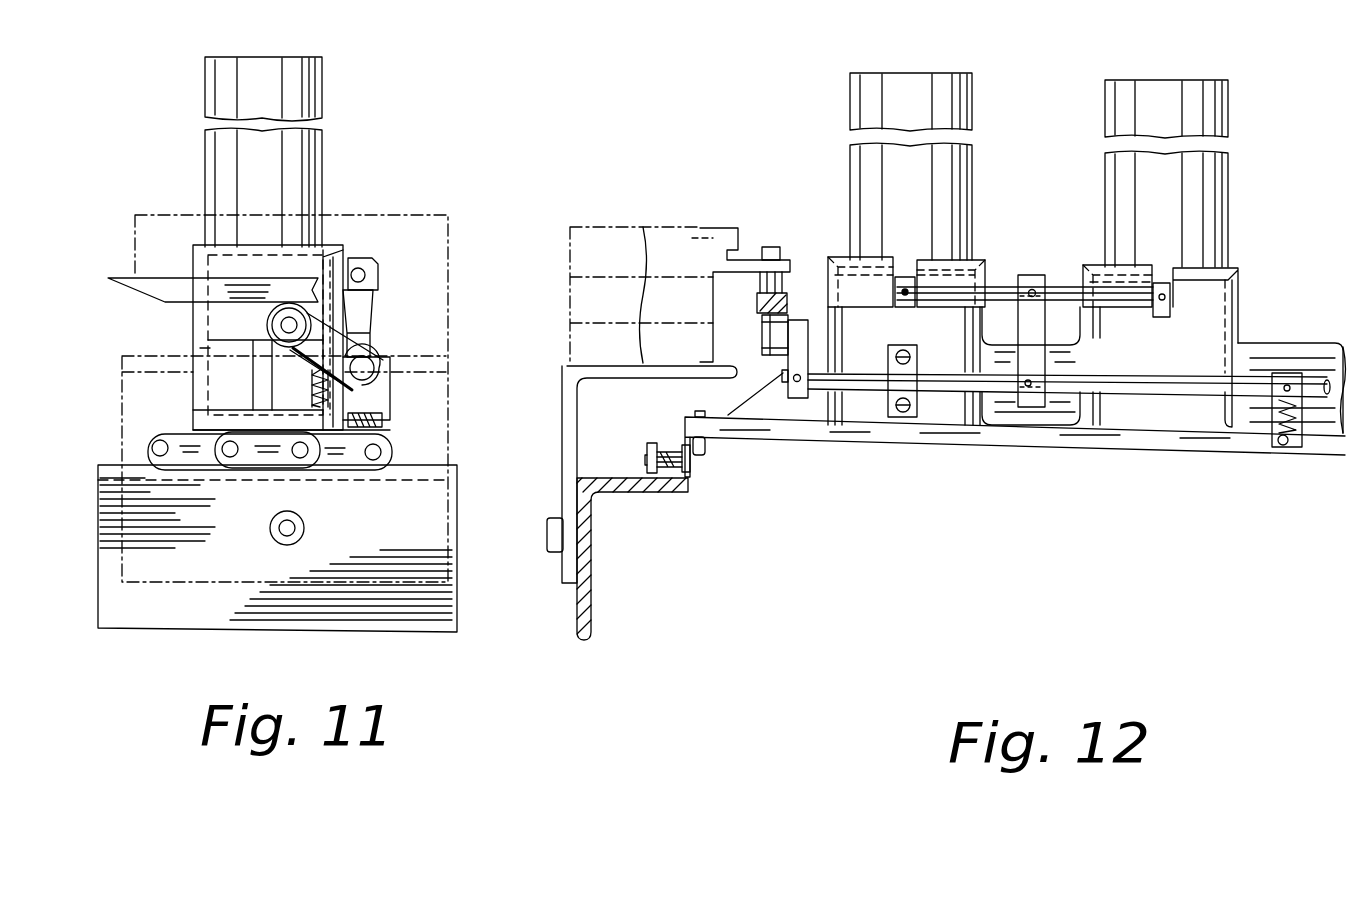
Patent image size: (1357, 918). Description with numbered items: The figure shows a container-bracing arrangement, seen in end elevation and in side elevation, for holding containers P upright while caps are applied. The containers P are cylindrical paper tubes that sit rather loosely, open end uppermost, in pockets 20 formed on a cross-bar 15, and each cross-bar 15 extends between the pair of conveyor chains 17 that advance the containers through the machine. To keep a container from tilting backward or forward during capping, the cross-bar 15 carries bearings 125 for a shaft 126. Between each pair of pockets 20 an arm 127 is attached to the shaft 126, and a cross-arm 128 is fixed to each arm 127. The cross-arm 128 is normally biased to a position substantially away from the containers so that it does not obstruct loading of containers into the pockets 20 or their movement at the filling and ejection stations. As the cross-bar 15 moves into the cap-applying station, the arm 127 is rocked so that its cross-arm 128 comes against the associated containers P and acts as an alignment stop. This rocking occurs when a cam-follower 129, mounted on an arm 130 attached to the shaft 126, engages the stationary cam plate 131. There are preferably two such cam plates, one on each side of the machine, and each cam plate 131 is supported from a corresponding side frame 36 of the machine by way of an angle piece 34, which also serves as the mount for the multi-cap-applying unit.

In FIG. 11, the containers P is at (322, 135).
In FIG. 12, the containers P is at (1105, 165).
In FIG. 11, the cross-bar 15 is at (193, 422).
In FIG. 12, the cross-bar 15 is at (953, 437).
In FIG. 11, the conveyor chains 17 is at (387, 452).
In FIG. 12, the conveyor chains 17 is at (650, 447).
In FIG. 11, the pockets 20 is at (335, 253).
In FIG. 12, the pockets 20 is at (1238, 290).
In FIG. 11, the angle piece 34 is at (447, 460).
In FIG. 12, the angle piece 34 is at (570, 455).
In FIG. 11, the side frame 36 is at (447, 632).
In FIG. 12, the side frame 36 is at (585, 605).
In FIG. 11, the bearings 125 is at (383, 355).
In FIG. 12, the bearings 125 is at (1069, 396).
In FIG. 11, the shaft 126 is at (375, 373).
In FIG. 11, the arm 127 is at (367, 312).
In FIG. 12, the arm 127 is at (1033, 277).
In FIG. 11, the cross-arm 128 is at (205, 348).
In FIG. 12, the cross-arm 128 is at (1000, 290).
In FIG. 11, the cam-follower 129 is at (272, 313).
In FIG. 12, the cam-follower 129 is at (766, 333).
In FIG. 11, the arm 130 is at (303, 363).
In FIG. 11, the cam plate 131 is at (170, 280).
In FIG. 12, the cam plate 131 is at (787, 297).